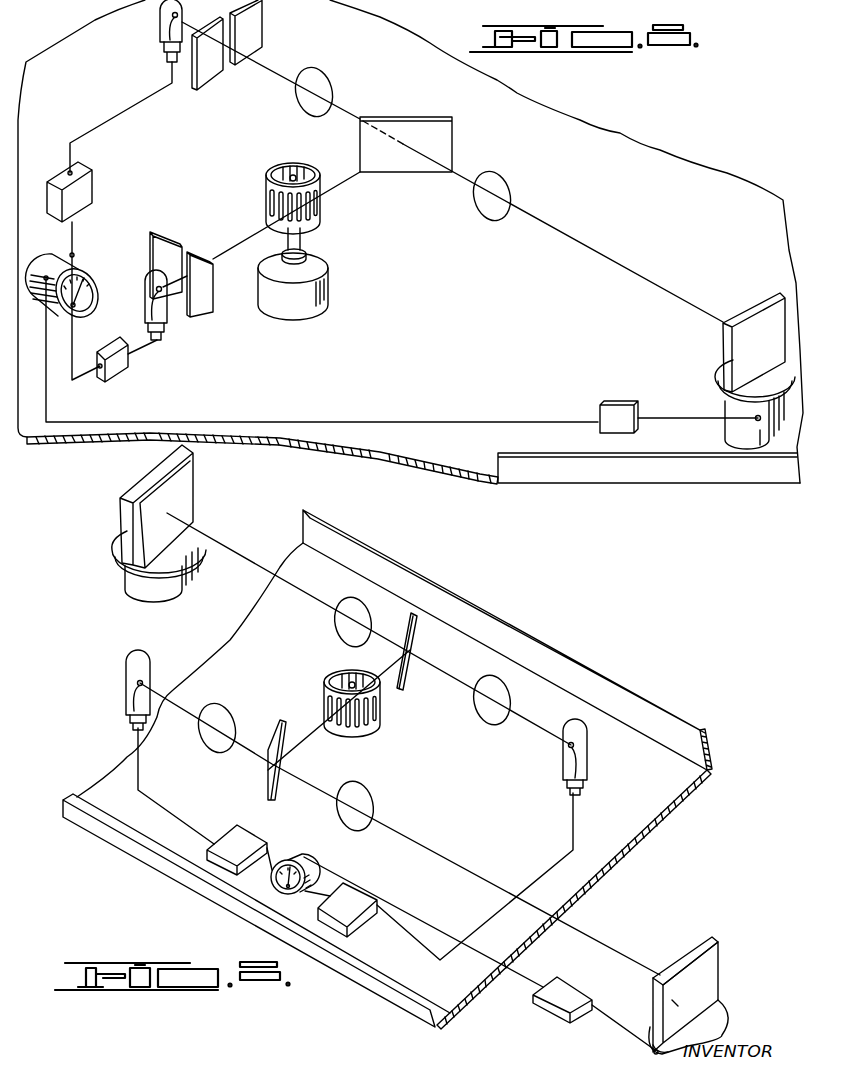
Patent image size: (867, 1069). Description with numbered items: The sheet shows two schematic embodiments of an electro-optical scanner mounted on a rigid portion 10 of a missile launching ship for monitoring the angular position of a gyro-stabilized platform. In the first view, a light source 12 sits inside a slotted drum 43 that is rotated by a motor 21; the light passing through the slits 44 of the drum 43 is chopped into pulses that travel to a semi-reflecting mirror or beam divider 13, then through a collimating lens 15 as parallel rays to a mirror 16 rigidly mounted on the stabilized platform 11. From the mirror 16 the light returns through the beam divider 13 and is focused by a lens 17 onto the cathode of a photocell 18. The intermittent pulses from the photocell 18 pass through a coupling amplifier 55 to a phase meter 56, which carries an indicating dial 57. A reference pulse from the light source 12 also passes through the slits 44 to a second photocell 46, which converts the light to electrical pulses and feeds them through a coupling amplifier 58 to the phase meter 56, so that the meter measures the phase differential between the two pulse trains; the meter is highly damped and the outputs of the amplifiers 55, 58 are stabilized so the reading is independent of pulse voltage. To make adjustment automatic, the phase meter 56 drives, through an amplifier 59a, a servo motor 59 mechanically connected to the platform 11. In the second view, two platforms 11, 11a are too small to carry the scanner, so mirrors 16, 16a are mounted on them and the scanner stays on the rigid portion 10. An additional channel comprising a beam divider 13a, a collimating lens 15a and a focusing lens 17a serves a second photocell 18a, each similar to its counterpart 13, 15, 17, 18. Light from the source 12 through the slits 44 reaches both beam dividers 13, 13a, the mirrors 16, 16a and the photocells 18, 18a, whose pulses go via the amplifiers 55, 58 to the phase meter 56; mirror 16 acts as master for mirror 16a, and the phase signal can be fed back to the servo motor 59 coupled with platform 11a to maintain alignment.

In FIG. 5, the rigid portion of the ship 10 is at (672, 468).
In FIG. 6, the rigid portion of the ship 10 is at (193, 893).
In FIG. 5, the gyro-stabilized platform 11 is at (723, 400).
In FIG. 6, the gyro-stabilized platform 11 is at (123, 547).
In FIG. 6, the second gyro-stabilized platform 11a is at (707, 980).
In FIG. 5, the light source 12 is at (318, 184).
In FIG. 6, the light source 12 is at (356, 704).
In FIG. 5, the semi-reflecting mirror 13 is at (440, 136).
In FIG. 6, the semi-reflecting mirror 13 is at (415, 668).
In FIG. 6, the second semi-reflecting beam divider 13a is at (278, 777).
In FIG. 5, the collimating lens 15 is at (507, 186).
In FIG. 6, the collimating lens 15 is at (340, 625).
In FIG. 6, the second collimating lens 15a is at (367, 795).
In FIG. 5, the mirror 16 is at (725, 343).
In FIG. 6, the mirror 16 is at (178, 502).
In FIG. 6, the second mirror 16a is at (690, 952).
In FIG. 5, the focusing lens 17 is at (330, 84).
In FIG. 6, the focusing lens 17 is at (485, 722).
In FIG. 6, the second focusing lens 17a is at (227, 713).
In FIG. 5, the photoelectric cell 18 is at (160, 18).
In FIG. 6, the photoelectric cell 18 is at (585, 752).
In FIG. 5, the second photocell 18a is at (257, 24).
In FIG. 6, the second photocell 18a is at (127, 675).
In FIG. 5, the motor 21 is at (328, 280).
In FIG. 5, the slotted drum 43 is at (318, 222).
In FIG. 6, the slotted drum 43 is at (370, 735).
In FIG. 5, the slits 44 is at (318, 199).
In FIG. 6, the slits 44 is at (380, 716).
In FIG. 5, the second photoelectric cell 46 is at (168, 300).
In FIG. 5, the coupling amplifier 55 is at (80, 185).
In FIG. 6, the coupling amplifier 55 is at (366, 910).
In FIG. 5, the phase meter 56 is at (62, 258).
In FIG. 6, the phase meter 56 is at (312, 862).
In FIG. 5, the indicating dial 57 is at (88, 300).
In FIG. 6, the indicating dial 57 is at (280, 893).
In FIG. 5, the coupling amplifier 58 is at (125, 370).
In FIG. 6, the coupling amplifier 58 is at (255, 810).
In FIG. 5, the servo motor 59 is at (737, 432).
In FIG. 6, the servo motor 59 is at (718, 1021).
In FIG. 5, the amplifier 59a is at (610, 403).
In FIG. 6, the amplifier 59a is at (577, 965).